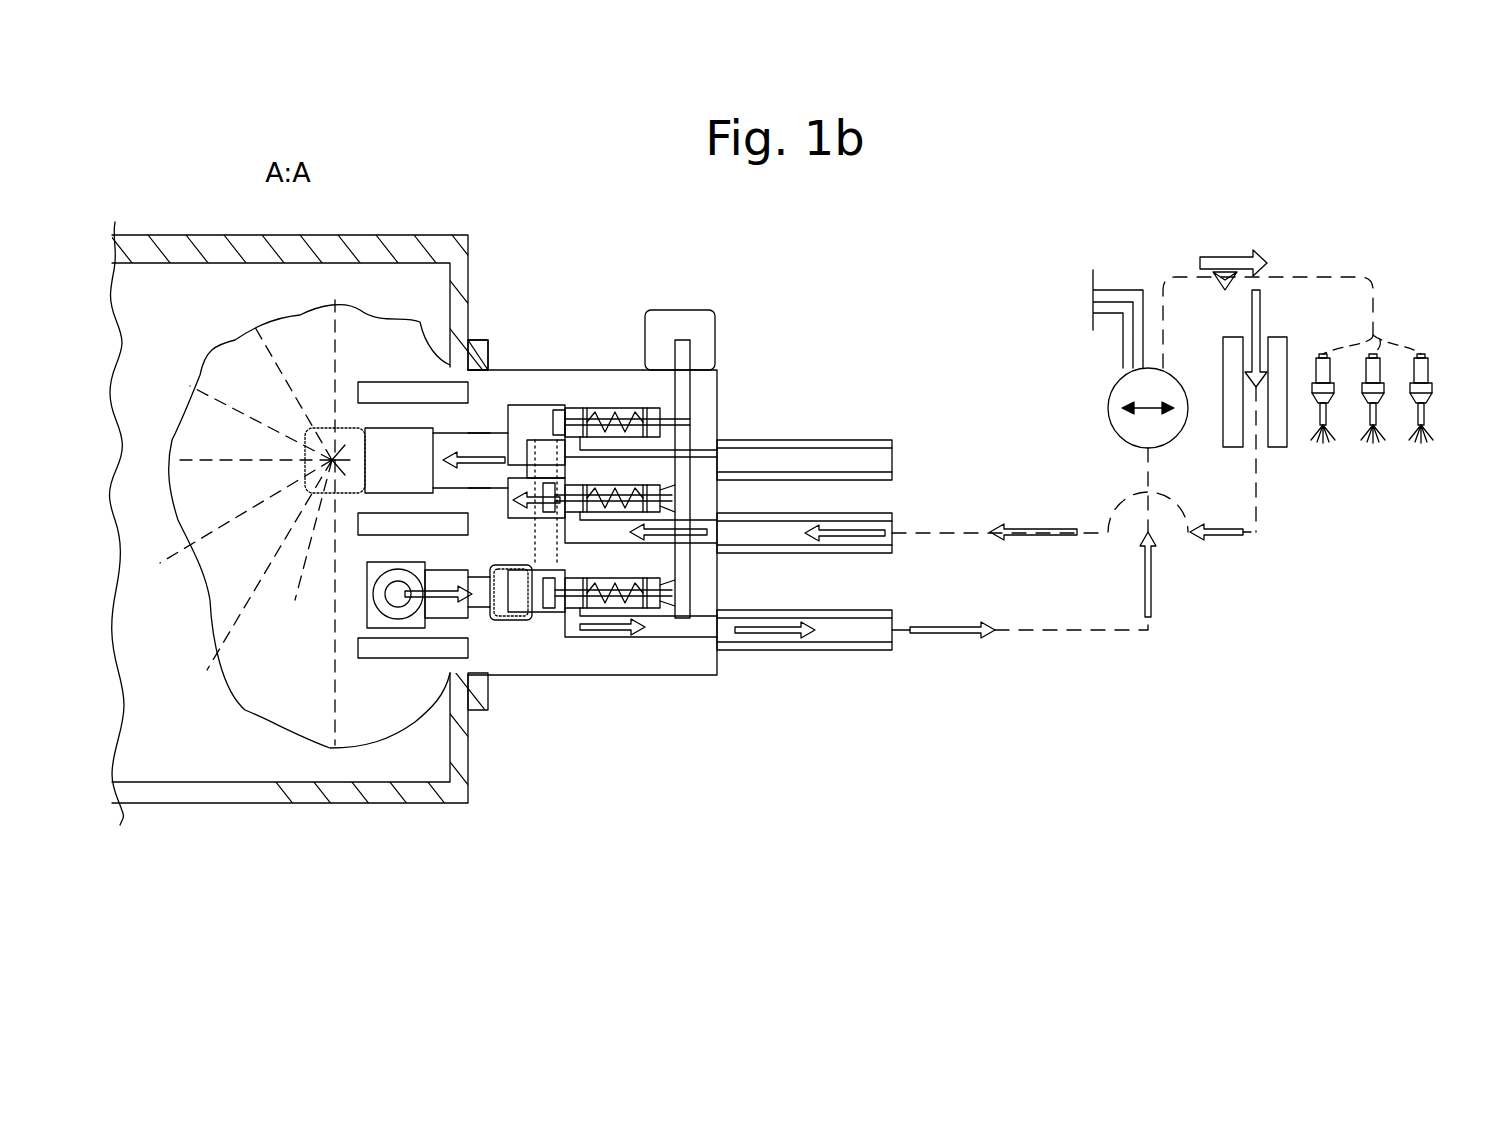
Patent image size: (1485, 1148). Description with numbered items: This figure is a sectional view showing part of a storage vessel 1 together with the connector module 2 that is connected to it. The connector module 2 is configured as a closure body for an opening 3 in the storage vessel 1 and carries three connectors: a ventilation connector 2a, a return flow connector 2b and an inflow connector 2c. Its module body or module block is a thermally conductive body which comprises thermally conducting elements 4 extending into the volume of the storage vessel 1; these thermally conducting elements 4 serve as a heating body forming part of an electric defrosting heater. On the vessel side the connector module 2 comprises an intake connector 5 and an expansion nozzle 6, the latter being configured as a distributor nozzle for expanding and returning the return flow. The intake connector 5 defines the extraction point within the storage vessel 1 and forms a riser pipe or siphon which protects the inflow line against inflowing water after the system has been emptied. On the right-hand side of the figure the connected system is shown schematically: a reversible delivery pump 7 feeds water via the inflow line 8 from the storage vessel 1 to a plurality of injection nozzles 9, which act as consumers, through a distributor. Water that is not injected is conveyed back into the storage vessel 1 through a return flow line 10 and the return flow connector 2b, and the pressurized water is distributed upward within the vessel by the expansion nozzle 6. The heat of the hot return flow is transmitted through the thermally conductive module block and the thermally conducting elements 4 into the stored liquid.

The storage vessel 1 is at (440, 237).
The connector module 2 is at (707, 400).
The ventilation connector 2a is at (858, 440).
The return flow connector 2b is at (540, 495).
The inflow connector 2c is at (546, 422).
The opening 3 is at (497, 683).
The thermally conducting elements 4 is at (365, 392).
The intake connector 5 is at (417, 622).
The expansion nozzle 6 is at (332, 495).
The reversible delivery pump 7 is at (1118, 395).
The inflow line 8 is at (1092, 632).
The injection nozzles 9 is at (1323, 355).
The return flow line 10 is at (985, 532).